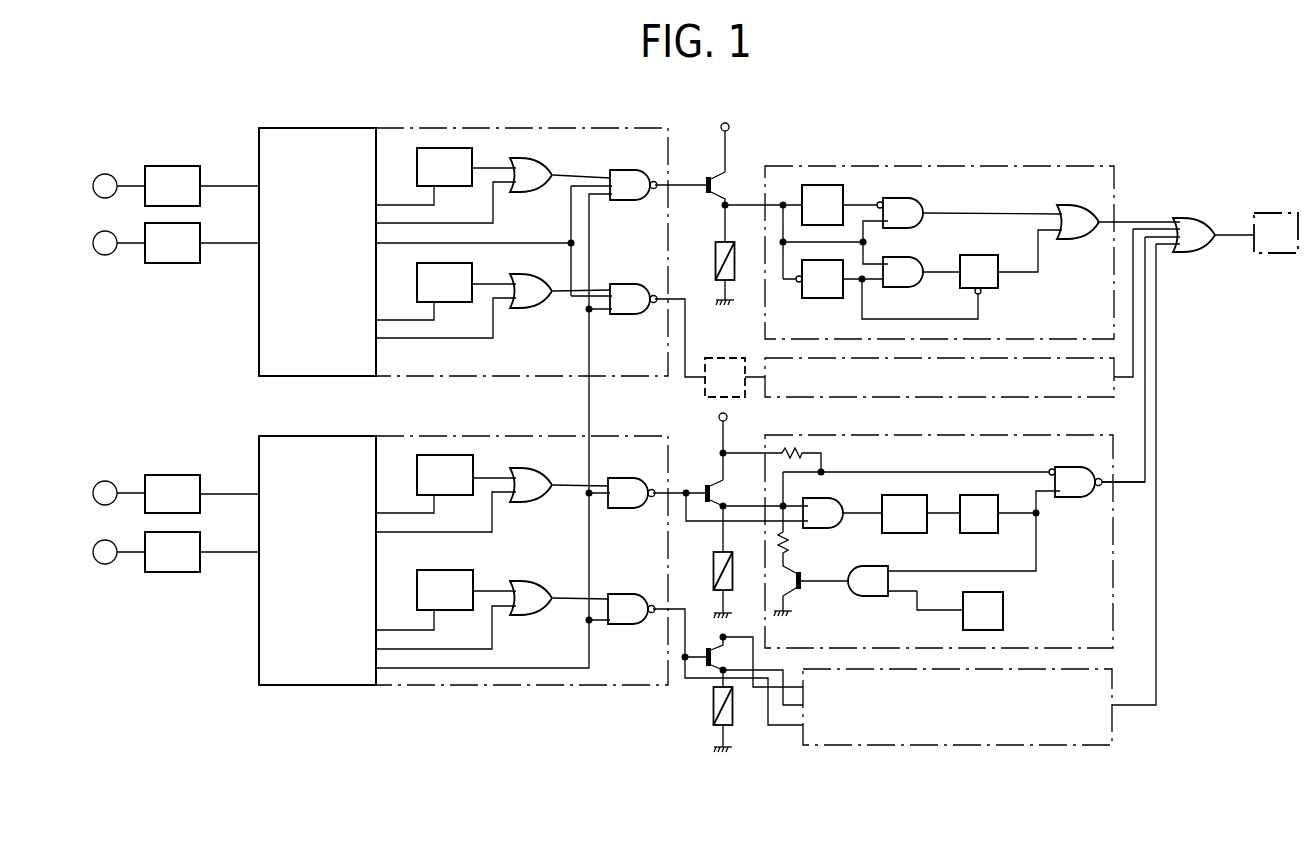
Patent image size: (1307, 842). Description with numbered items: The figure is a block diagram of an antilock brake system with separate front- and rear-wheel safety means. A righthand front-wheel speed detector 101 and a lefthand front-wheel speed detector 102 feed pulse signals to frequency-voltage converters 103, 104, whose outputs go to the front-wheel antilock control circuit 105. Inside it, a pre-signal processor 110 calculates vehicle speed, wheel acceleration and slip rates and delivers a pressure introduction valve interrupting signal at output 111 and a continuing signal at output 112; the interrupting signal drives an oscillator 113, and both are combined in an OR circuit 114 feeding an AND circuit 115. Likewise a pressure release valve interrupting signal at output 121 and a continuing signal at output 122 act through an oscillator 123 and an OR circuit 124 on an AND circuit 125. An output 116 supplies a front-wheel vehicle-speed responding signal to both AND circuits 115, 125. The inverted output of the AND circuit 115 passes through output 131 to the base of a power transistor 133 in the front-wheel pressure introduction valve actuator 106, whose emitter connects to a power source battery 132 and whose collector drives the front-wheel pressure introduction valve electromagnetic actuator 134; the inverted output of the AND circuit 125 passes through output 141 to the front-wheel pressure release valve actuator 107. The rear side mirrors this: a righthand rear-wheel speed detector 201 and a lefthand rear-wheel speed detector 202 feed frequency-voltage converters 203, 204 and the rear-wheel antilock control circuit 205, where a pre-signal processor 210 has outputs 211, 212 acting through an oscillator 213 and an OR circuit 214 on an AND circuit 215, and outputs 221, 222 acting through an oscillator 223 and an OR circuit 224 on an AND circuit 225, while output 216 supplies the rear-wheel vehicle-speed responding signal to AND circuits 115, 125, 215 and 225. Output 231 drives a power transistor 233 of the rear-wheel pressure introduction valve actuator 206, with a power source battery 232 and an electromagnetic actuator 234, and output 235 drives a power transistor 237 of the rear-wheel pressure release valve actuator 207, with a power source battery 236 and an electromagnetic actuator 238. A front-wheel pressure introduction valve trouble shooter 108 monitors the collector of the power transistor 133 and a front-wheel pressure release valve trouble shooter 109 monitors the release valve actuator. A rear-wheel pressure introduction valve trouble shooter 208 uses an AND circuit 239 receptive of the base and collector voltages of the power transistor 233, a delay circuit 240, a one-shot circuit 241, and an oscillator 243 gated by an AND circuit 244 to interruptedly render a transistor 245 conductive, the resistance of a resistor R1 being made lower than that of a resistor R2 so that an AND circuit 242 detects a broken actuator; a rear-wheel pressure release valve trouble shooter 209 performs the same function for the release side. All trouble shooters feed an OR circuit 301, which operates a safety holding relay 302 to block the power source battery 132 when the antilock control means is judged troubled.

The righthand front-wheel speed detector 101 is at (105, 174).
The lefthand front-wheel speed detector 102 is at (105, 231).
The frequency-voltage converter 103 is at (154, 198).
The frequency-voltage converter 104 is at (154, 255).
The front-wheel antilock control circuit 105 is at (497, 126).
The front-wheel pressure introduction valve actuator 106 is at (701, 146).
The front-wheel pressure release valve actuator 107 is at (722, 356).
The front-wheel pressure introduction valve trouble shooter 108 is at (932, 164).
The front-wheel pressure release valve trouble shooter 109 is at (920, 400).
The pre-signal processor 110 is at (281, 256).
The output 111 is at (388, 199).
The output 112 is at (429, 207).
The oscillator 113 is at (426, 178).
The OR circuit 114 is at (520, 184).
The AND circuit 115 is at (616, 194).
The output 116 is at (477, 241).
The output 121 is at (388, 317).
The output 122 is at (429, 324).
The oscillator 123 is at (426, 294).
The OR circuit 124 is at (520, 300).
The AND circuit 125 is at (616, 308).
The output 131 is at (665, 189).
The power source battery 132 is at (733, 135).
The power transistor 133 is at (707, 177).
The front-wheel pressure introduction valve electromagnetic actuator 134 is at (714, 263).
The output 141 is at (665, 296).
The righthand rear-wheel speed detector 201 is at (104, 481).
The lefthand rear-wheel speed detector 202 is at (105, 540).
The frequency-voltage converter 203 is at (154, 506).
The frequency-voltage converter 204 is at (154, 564).
The rear-wheel antilock control circuit 205 is at (485, 434).
The rear-wheel pressure introduction valve actuator 206 is at (702, 450).
The rear-wheel pressure release valve actuator 207 is at (705, 618).
The rear-wheel pressure introduction valve trouble shooter 208 is at (1000, 433).
The rear-wheel pressure release valve trouble shooter 209 is at (963, 748).
The pre-signal processor 210 is at (281, 566).
The output 211 is at (385, 510).
The output 212 is at (426, 518).
The oscillator 213 is at (427, 486).
The OR circuit 214 is at (520, 494).
The AND circuit 215 is at (614, 502).
The output 216 is at (474, 437).
The output 221 is at (385, 625).
The output 222 is at (426, 633).
The oscillator 223 is at (427, 601).
The OR circuit 224 is at (520, 607).
The AND circuit 225 is at (614, 618).
The output 231 is at (660, 487).
The power source battery 232 is at (745, 440).
The power transistor 233 is at (705, 485).
The rear-wheel pressure introduction valve electromagnetic actuator 234 is at (714, 561).
The output 235 is at (663, 613).
The power source battery 236 is at (762, 650).
The power transistor 237 is at (710, 643).
The rear-wheel pressure release valve electromagnetic actuator 238 is at (714, 705).
The AND circuit 239 is at (810, 522).
The delay circuit 240 is at (886, 526).
The one-shot circuit 241 is at (963, 526).
The AND circuit 242 is at (1062, 491).
The oscillator 243 is at (967, 623).
The AND circuit 244 is at (855, 590).
The transistor 245 is at (811, 594).
The resistor R1 is at (797, 519).
The resistor R2 is at (777, 455).
The OR circuit 301 is at (1183, 244).
The safety holding relay 302 is at (1258, 245).